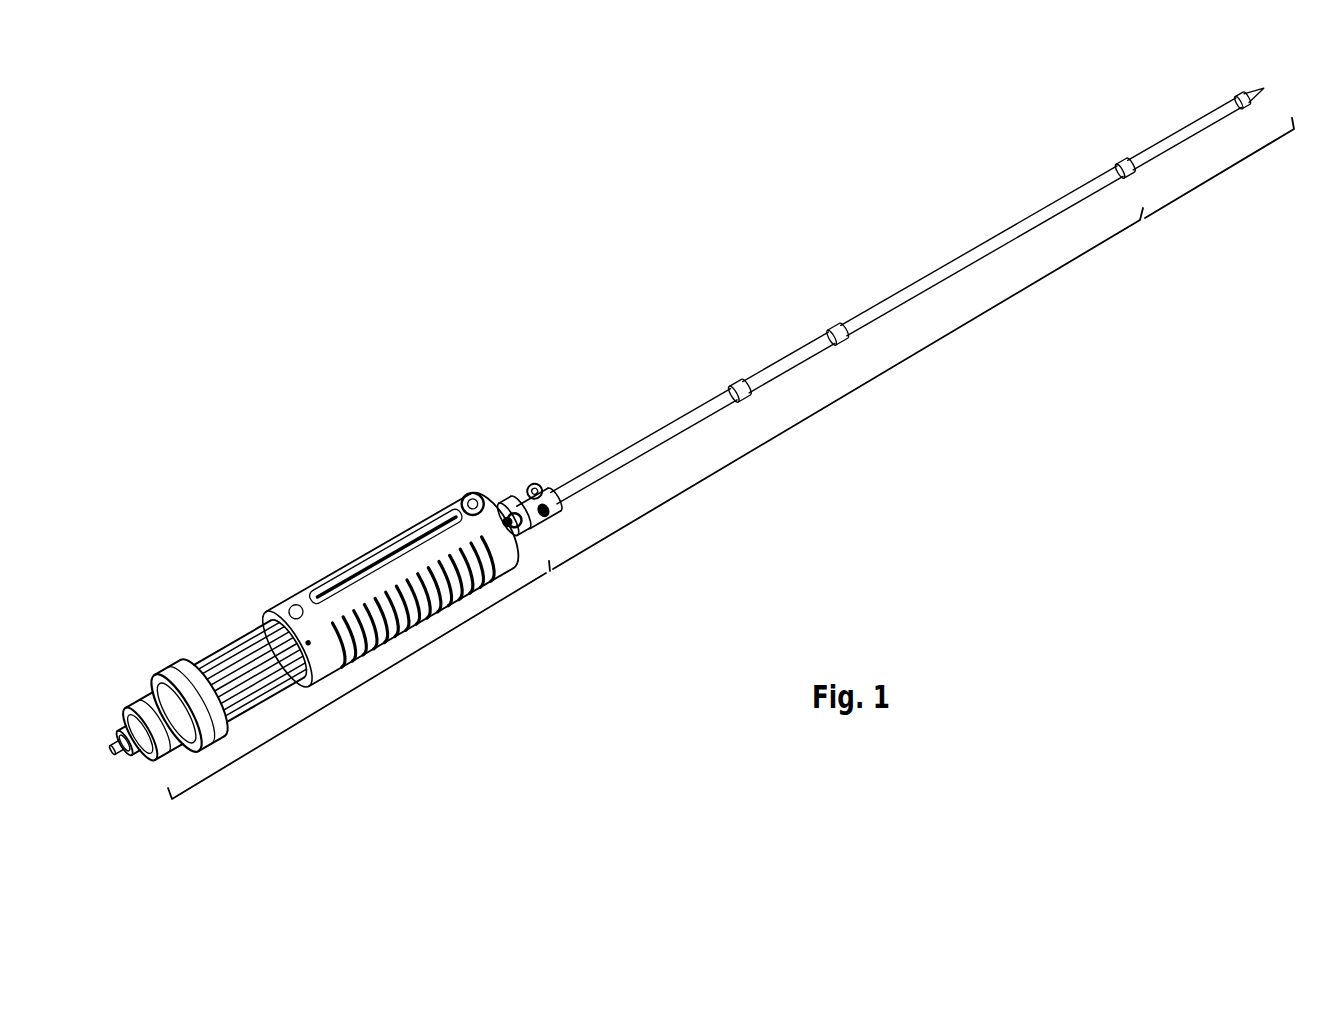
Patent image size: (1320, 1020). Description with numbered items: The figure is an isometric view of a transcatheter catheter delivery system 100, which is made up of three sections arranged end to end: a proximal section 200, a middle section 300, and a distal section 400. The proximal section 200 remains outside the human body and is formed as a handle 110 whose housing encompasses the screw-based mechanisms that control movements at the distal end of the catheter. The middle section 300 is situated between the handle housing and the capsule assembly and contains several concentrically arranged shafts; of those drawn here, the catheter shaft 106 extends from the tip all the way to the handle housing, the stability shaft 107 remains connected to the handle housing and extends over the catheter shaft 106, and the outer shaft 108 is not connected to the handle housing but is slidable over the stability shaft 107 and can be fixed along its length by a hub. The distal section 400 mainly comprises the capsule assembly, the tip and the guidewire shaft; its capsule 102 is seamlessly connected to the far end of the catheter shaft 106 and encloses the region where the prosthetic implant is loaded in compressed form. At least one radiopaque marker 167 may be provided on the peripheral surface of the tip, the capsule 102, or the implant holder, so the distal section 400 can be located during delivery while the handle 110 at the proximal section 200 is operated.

The catheter delivery system 100 is at (647, 165).
The capsule 102 is at (1150, 153).
The catheter shaft 106 is at (941, 266).
The stability shaft 107 is at (766, 368).
The outer shaft 108 is at (632, 446).
The handle 110 is at (313, 581).
The radiopaque marker 167 is at (1137, 162).
The proximal section 200 is at (363, 686).
The middle section 300 is at (849, 396).
The distal section 400 is at (1222, 174).